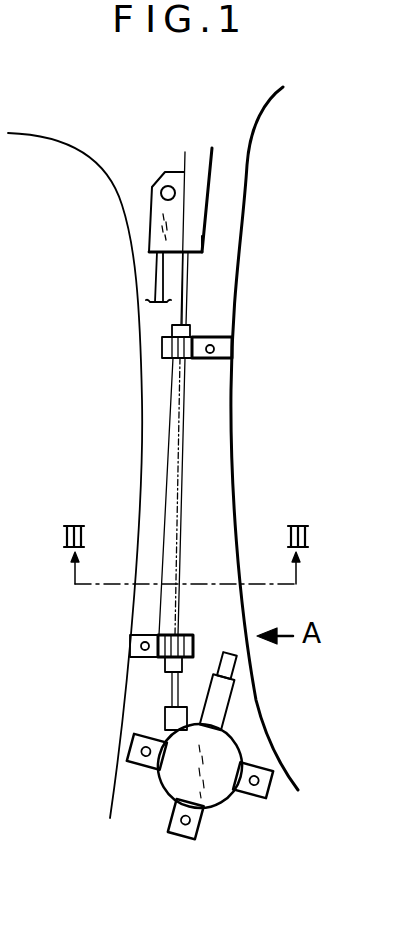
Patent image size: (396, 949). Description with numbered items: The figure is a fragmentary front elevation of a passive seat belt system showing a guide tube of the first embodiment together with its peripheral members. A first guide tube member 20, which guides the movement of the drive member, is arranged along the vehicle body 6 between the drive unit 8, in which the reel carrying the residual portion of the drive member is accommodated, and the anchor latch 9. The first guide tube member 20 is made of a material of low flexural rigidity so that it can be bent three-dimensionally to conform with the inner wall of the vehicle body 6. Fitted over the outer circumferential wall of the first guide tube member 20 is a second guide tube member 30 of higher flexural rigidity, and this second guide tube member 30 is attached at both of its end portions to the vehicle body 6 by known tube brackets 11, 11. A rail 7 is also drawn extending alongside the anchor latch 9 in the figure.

The vehicle body 6 is at (159, 413).
The guide rail 7 is at (198, 180).
The drive unit 8 is at (152, 795).
The anchor latch 9 is at (150, 243).
The tube bracket 11 is at (205, 358).
The first guide tube member 20 is at (185, 305).
The second guide tube member 30 is at (172, 490).